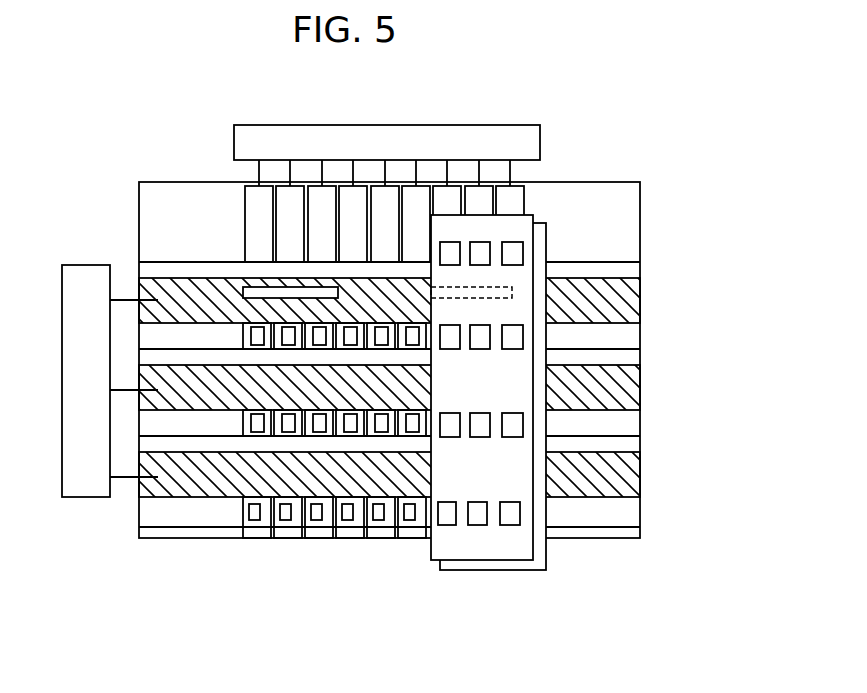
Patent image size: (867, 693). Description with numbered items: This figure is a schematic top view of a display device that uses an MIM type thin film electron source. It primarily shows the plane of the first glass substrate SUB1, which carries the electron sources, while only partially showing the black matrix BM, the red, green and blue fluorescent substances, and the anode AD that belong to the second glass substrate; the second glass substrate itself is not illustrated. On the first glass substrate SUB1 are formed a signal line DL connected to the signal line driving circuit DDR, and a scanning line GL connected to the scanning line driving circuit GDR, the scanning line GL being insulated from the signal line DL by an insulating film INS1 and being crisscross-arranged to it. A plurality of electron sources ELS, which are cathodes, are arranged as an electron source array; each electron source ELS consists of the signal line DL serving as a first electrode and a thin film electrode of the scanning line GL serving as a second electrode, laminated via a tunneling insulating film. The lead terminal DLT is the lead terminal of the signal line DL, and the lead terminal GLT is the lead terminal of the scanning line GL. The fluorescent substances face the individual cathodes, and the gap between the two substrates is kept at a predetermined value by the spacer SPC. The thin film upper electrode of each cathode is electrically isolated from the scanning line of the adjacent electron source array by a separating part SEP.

The first glass substrate SUB1 is at (150, 192).
The insulating film INS1 is at (525, 200).
The scanning line GL is at (625, 302).
The separating part SEP is at (625, 357).
The electron source ELS is at (255, 518).
The signal line DL is at (517, 187).
The signal line driving circuit DDR is at (462, 137).
The lead terminal of the signal line DLT is at (258, 170).
The spacer SPC is at (245, 290).
The scanning line driving circuit GDR is at (88, 265).
The lead terminal of the scanning line GLT is at (122, 478).
The black matrix BM is at (440, 555).
The anode AD is at (548, 240).